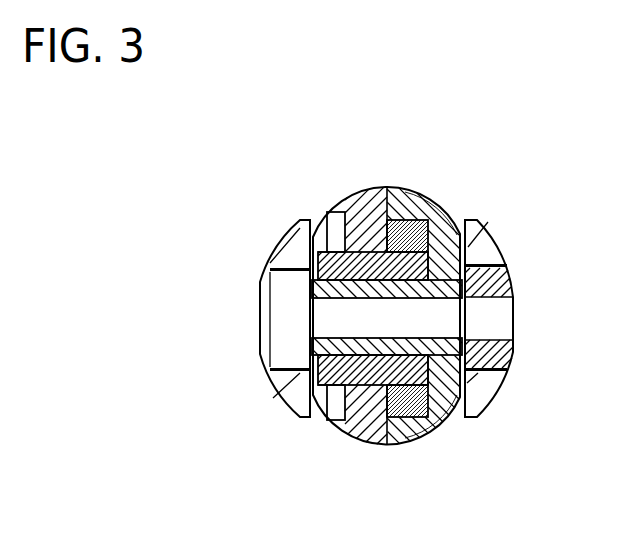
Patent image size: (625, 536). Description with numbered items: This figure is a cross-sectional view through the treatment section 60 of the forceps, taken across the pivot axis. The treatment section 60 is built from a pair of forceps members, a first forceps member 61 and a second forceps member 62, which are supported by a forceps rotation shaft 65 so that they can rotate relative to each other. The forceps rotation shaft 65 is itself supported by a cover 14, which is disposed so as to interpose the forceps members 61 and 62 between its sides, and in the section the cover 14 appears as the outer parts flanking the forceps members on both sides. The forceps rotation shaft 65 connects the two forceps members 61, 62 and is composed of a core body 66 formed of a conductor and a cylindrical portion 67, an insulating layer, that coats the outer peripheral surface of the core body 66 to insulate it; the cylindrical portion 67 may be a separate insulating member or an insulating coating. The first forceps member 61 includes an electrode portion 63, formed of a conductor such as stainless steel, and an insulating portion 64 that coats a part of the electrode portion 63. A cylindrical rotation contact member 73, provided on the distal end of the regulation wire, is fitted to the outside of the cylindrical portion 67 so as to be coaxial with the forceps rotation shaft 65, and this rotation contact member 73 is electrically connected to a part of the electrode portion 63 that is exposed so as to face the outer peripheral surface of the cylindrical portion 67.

The treatment section 60 is at (504, 162).
The first forceps member 61 is at (434, 166).
The second forceps member 62 is at (360, 435).
The electrode portion 63 is at (404, 238).
The insulating portion 64 is at (447, 415).
The cover 14 is at (482, 245).
The forceps rotation shaft 65 is at (193, 313).
The core body 66 is at (332, 320).
The cylindrical portion 67 is at (317, 347).
The rotation contact member 73 is at (332, 378).